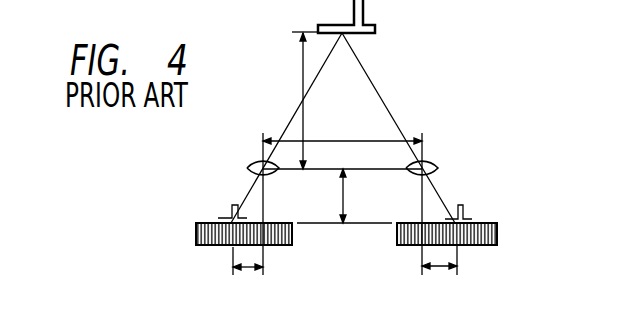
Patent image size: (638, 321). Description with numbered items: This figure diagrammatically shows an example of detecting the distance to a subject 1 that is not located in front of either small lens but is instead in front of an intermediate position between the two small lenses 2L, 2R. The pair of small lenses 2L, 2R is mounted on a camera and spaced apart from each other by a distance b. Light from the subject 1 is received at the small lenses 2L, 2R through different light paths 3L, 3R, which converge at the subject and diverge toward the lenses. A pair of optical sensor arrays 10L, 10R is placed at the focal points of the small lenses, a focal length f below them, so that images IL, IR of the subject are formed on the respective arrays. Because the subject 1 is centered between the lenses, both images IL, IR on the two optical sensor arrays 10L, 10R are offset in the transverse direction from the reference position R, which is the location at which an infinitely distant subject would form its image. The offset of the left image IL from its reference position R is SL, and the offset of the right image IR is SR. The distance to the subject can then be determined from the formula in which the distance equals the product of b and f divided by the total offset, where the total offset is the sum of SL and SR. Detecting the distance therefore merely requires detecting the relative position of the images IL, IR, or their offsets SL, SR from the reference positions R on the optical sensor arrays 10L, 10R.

The subject 1 is at (364, 12).
The left small lens 2L is at (247, 166).
The right small lens 2R is at (439, 166).
The left light path 3L is at (312, 85).
The right light path 3R is at (373, 84).
The left optical sensor array 10L is at (196, 233).
The right optical sensor array 10R is at (497, 231).
The left image IL is at (225, 218).
The right image IR is at (468, 210).
The reference position R is at (265, 246).
The offset of the left image SL is at (243, 272).
The offset of the right image SR is at (440, 268).
The distance between the small lenses b is at (342, 132).
The focal length f is at (347, 196).